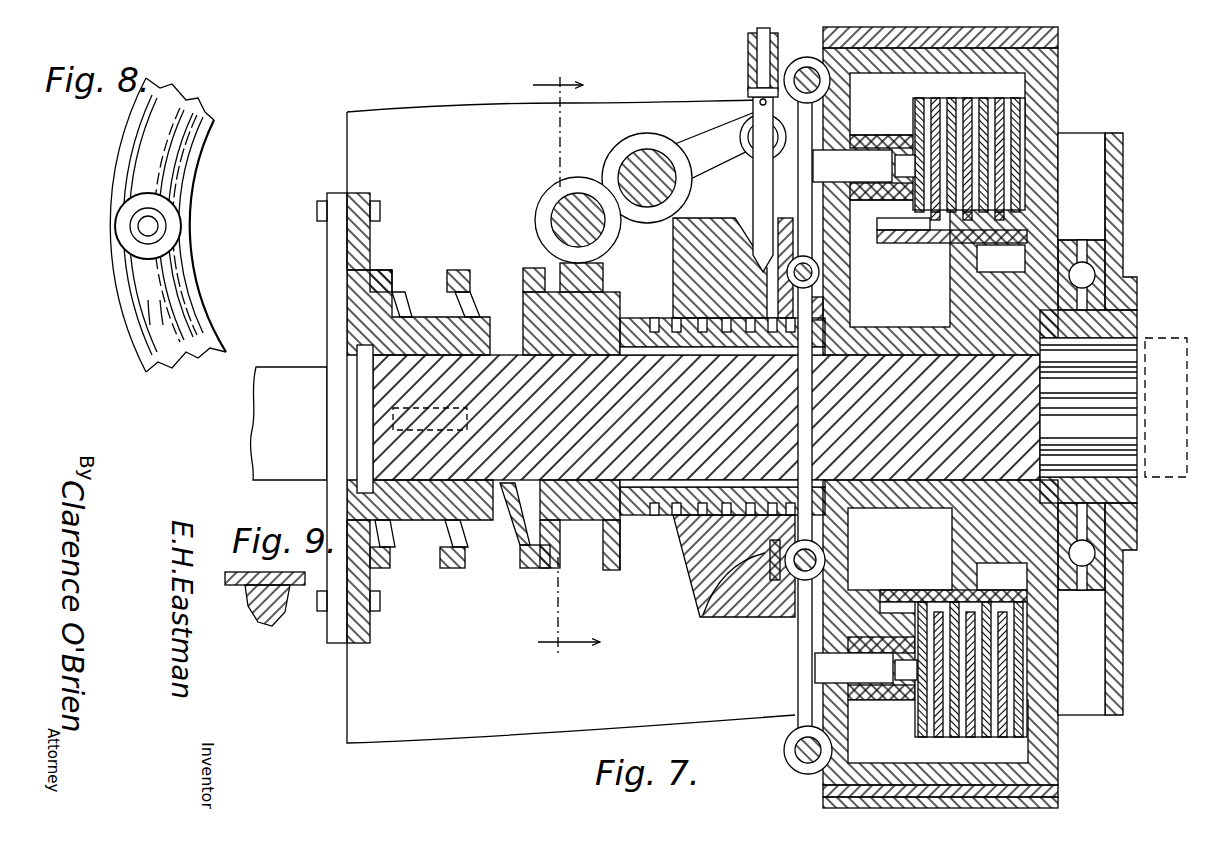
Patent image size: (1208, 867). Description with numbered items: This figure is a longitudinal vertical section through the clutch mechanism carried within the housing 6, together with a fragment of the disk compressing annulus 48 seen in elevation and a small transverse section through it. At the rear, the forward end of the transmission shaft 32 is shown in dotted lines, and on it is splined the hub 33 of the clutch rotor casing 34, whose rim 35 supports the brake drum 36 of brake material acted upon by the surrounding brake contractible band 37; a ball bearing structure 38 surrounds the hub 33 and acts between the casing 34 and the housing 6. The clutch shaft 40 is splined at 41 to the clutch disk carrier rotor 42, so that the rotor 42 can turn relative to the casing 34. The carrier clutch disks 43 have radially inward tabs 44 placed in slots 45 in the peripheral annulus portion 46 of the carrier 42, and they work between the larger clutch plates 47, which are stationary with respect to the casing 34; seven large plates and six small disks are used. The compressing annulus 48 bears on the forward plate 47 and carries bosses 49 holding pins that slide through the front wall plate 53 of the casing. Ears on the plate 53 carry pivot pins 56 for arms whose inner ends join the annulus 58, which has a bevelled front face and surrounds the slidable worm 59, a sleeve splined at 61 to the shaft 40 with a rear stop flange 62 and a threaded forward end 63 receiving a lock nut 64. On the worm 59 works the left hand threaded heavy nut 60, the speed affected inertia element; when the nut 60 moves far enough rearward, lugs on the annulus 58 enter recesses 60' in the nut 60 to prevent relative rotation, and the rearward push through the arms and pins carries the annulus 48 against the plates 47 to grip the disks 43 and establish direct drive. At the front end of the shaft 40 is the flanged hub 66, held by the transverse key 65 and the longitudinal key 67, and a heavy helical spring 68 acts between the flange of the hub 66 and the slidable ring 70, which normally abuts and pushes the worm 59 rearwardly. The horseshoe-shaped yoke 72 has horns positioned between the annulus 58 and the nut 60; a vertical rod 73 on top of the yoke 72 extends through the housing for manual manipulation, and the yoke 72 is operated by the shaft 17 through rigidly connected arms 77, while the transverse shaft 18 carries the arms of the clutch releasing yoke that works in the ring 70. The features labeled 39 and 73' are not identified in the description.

In FIG. 7, the housing 6 is at (1126, 178).
In FIG. 7, the shaft 17 is at (647, 165).
In FIG. 7, the transverse shaft 18 is at (578, 200).
In FIG. 7, the transmission shaft 32 is at (1172, 480).
In FIG. 7, the hub 33 is at (1138, 322).
In FIG. 7, the clutch rotor casing 34 is at (1060, 115).
In FIG. 7, the rim 35 is at (964, 55).
In FIG. 7, the brake drum 36 is at (1060, 796).
In FIG. 7, the brake contractible band 37 is at (825, 803).
In FIG. 7, the ball bearing structure 38 is at (1090, 246).
In FIG. 7, the splined shaft end 39 is at (1095, 472).
In FIG. 7, the clutch shaft 40 is at (390, 455).
In FIG. 7, the splines 41 is at (925, 500).
In FIG. 7, the clutch disk carrier rotor 42 is at (956, 312).
In FIG. 7, the carrier clutch disks 43 is at (925, 727).
In FIG. 7, the tabs 44 is at (940, 232).
In FIG. 7, the slots 45 is at (888, 222).
In FIG. 7, the peripheral annulus portion 46 is at (925, 232).
In FIG. 7, the clutch plates 47 is at (930, 97).
In FIG. 8, the compressing annulus 48 is at (108, 172).
In FIG. 9, the compressing annulus 48 is at (302, 612).
In FIG. 7, the bosses 49 is at (866, 705).
In FIG. 8, the bosses 49 is at (182, 226).
In FIG. 7, the front wall plate 53 is at (849, 272).
In FIG. 7, the pivot pins 56 is at (795, 757).
In FIG. 7, the annulus 58 is at (783, 595).
In FIG. 7, the worm 59 is at (662, 520).
In FIG. 7, the nut 60 is at (728, 585).
In FIG. 7, the recesses 60' is at (734, 597).
In FIG. 7, the splines 61 is at (580, 524).
In FIG. 7, the stop flange 62 is at (848, 540).
In FIG. 7, the threaded forward end 63 is at (615, 566).
In FIG. 7, the lock nut 64 is at (622, 548).
In FIG. 7, the transverse key 65 is at (362, 387).
In FIG. 7, the flanged hub 66 is at (345, 247).
In FIG. 7, the longitudinal key 67 is at (393, 420).
In FIG. 7, the helical spring 68 is at (450, 570).
In FIG. 7, the slidable ring 70 is at (572, 570).
In FIG. 7, the yoke 72 is at (753, 190).
In FIG. 7, the vertical rod 73 is at (742, 62).
In FIG. 7, the pivot pin 73' is at (731, 90).
In FIG. 7, the arms 77 is at (718, 152).